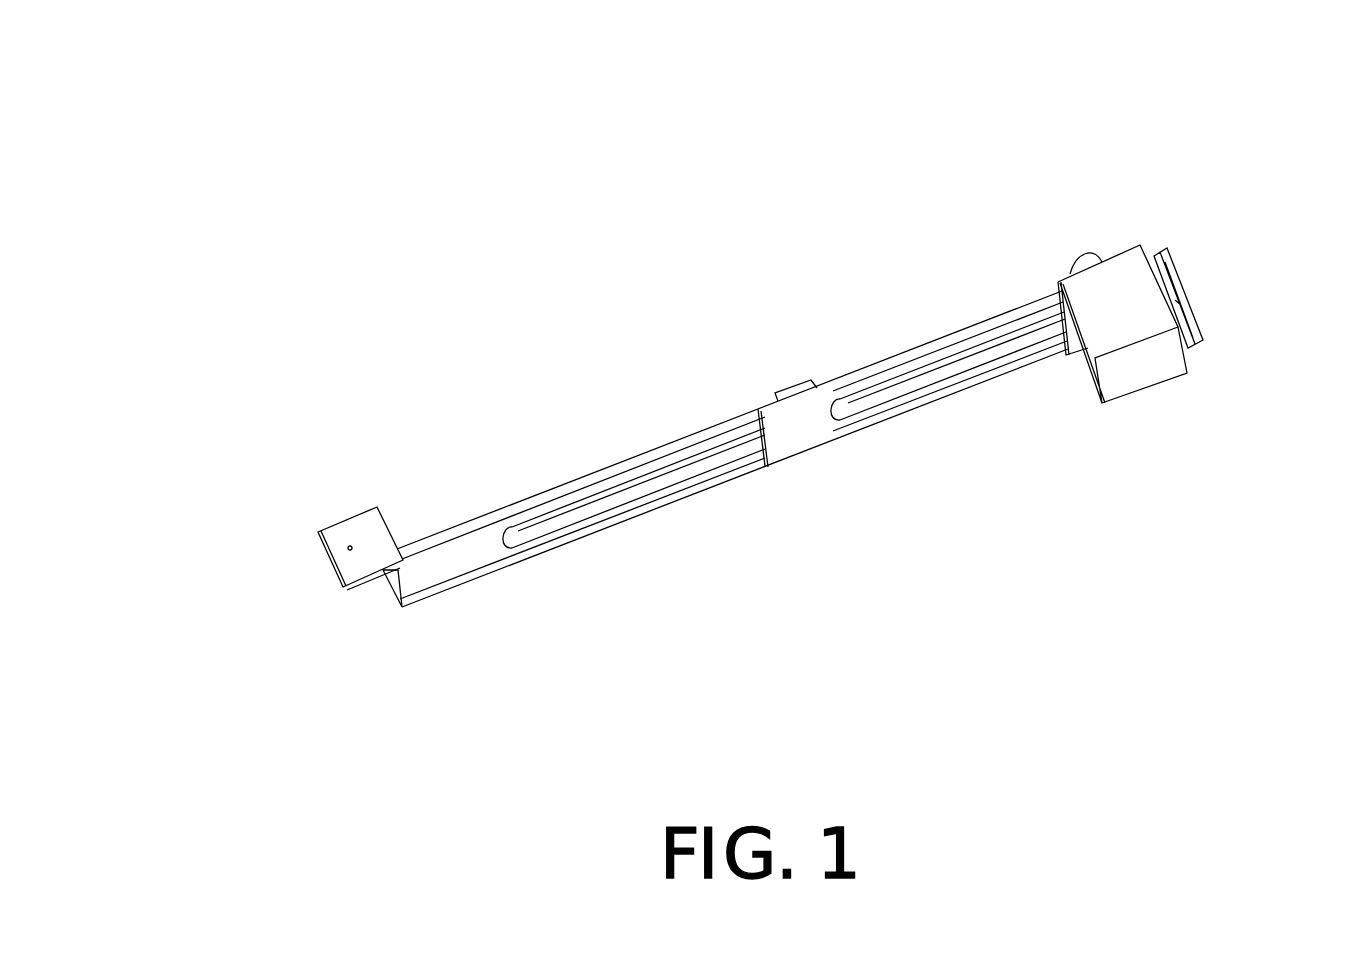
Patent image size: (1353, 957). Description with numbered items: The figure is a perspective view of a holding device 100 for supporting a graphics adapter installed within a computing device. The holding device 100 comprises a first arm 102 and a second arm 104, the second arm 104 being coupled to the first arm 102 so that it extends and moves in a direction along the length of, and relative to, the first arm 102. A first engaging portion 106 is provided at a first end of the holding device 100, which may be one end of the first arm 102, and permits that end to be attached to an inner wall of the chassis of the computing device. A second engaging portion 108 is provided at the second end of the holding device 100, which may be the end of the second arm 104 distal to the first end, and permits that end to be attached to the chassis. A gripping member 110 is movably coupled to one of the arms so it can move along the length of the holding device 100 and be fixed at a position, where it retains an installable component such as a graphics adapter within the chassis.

The holding device 100 is at (1095, 103).
The first arm 102 is at (578, 475).
The second arm 104 is at (887, 419).
The first engaging portion 106 is at (332, 523).
The second engaging portion 108 is at (1198, 316).
The gripping member 110 is at (1147, 388).